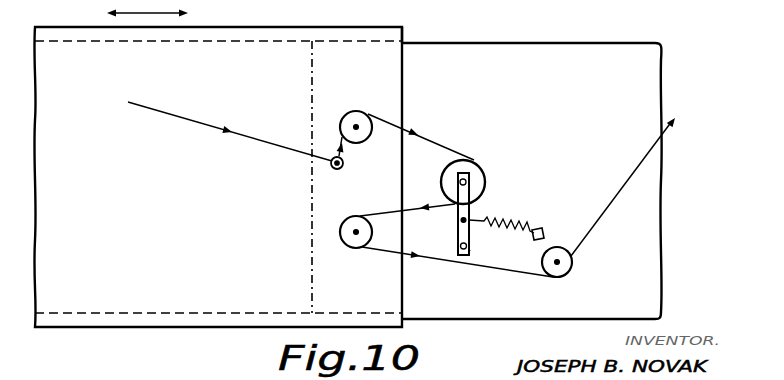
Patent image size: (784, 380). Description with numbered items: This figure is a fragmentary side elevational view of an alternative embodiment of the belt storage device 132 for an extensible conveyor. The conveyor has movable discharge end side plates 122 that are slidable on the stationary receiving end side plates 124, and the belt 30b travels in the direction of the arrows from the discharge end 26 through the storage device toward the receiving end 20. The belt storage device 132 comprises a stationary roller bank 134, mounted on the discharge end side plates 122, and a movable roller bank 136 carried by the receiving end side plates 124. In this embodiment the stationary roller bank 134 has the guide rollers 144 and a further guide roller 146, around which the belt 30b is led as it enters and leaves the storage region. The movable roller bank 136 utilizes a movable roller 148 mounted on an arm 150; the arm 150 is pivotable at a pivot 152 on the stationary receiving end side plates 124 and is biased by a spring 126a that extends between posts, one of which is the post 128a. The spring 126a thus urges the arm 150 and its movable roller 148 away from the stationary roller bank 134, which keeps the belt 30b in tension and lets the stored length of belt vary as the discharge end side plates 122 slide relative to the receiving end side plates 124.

The movable discharge end side plates 122 is at (217, 28).
The stationary receiving end side plates 124 is at (547, 43).
The belt storage device 132 is at (410, 35).
The discharge end 26 is at (99, 107).
The receiving end 20 is at (716, 112).
The belt 30b is at (193, 119).
The guide roller 146 is at (343, 168).
The guide rollers 144 is at (370, 274).
The movable roller bank 136 is at (484, 152).
The movable roller 148 is at (480, 173).
The arm 150 is at (458, 233).
The pivot 152 is at (469, 246).
The spring 126a is at (488, 222).
The post 128a is at (536, 228).
The stationary roller bank 134 is at (333, 190).